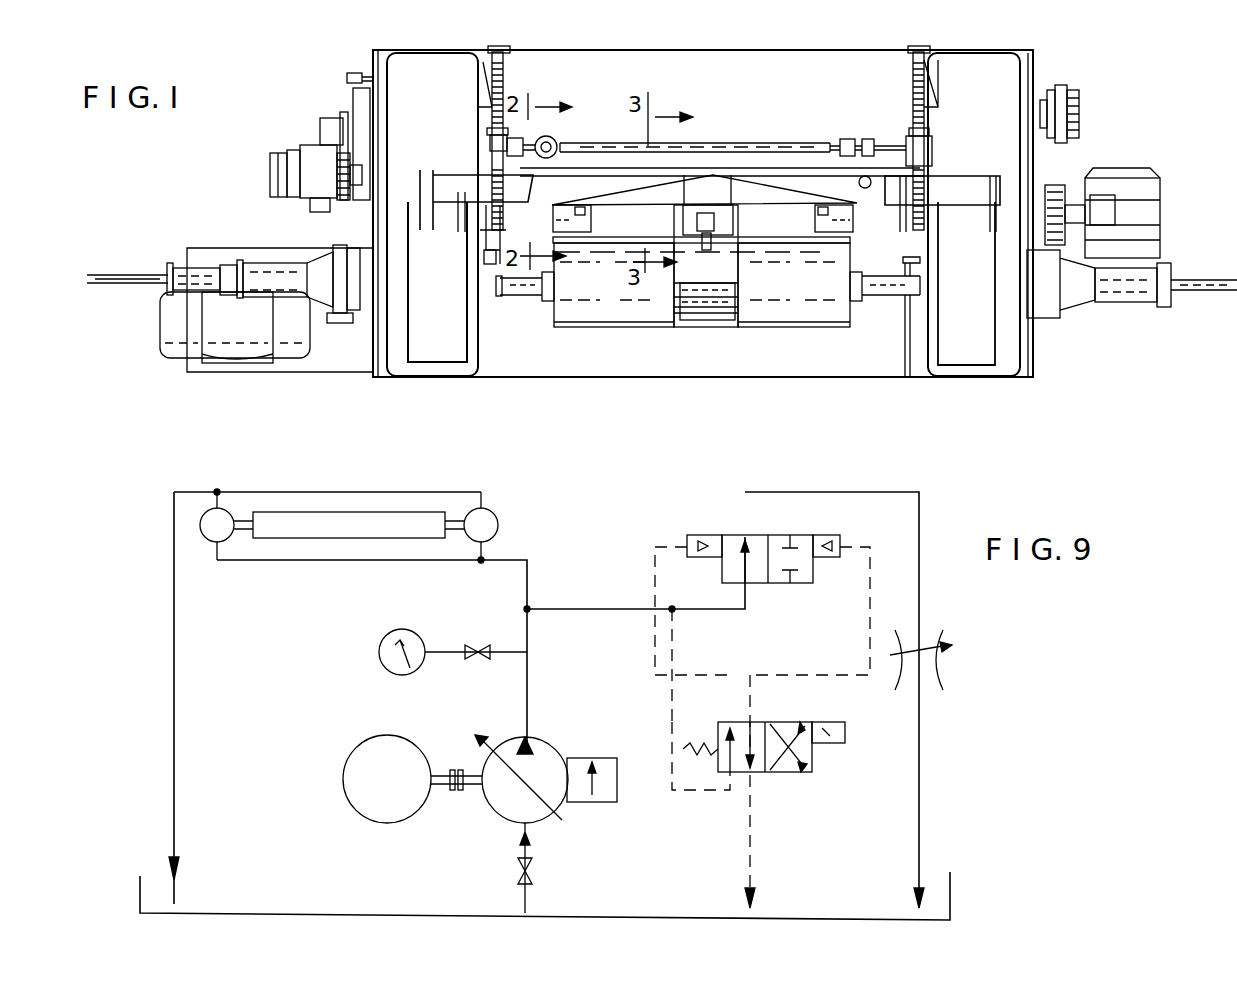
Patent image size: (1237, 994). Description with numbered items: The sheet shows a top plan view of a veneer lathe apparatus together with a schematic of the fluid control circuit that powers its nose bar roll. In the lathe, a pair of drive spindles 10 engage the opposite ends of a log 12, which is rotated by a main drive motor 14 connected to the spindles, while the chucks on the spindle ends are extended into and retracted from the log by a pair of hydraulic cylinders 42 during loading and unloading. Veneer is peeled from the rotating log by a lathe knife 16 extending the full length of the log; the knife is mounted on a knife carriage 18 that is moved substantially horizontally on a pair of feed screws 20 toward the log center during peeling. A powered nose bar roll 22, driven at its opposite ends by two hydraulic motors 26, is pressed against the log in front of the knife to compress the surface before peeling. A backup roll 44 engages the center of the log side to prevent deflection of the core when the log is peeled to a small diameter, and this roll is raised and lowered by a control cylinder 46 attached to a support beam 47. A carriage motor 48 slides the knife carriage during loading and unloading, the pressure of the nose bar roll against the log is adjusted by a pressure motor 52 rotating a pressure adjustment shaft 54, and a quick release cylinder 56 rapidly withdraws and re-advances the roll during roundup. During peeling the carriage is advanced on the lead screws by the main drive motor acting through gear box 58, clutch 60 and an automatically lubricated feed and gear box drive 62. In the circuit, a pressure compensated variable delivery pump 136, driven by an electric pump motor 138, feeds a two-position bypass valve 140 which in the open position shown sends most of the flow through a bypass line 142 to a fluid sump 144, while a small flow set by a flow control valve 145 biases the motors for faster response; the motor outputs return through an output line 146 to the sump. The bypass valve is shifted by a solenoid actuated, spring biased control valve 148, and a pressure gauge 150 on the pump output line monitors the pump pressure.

In FIG. 1, the drive spindles 10 is at (548, 300).
In FIG. 1, the log 12 is at (795, 310).
In FIG. 1, the main drive motor 14 is at (235, 335).
In FIG. 1, the lathe knife 16 is at (618, 244).
In FIG. 1, the knife carriage 18 is at (496, 222).
In FIG. 1, the feed screws 20 is at (480, 163).
In FIG. 1, the nose bar roll 22 is at (654, 230).
In FIG. 9, the nose bar roll 22 is at (340, 528).
In FIG. 1, the hydraulic motors 26 is at (582, 222).
In FIG. 9, the hydraulic motors 26 is at (205, 540).
In FIG. 1, the hydraulic cylinders 42 is at (265, 272).
In FIG. 1, the backup roll 44 is at (705, 320).
In FIG. 1, the control cylinder 46 is at (715, 222).
In FIG. 1, the support beam 47 is at (440, 178).
In FIG. 1, the carriage motor 48 is at (310, 158).
In FIG. 1, the pressure motor 52 is at (566, 142).
In FIG. 1, the pressure adjustment shaft 54 is at (548, 138).
In FIG. 1, the quick release cylinder 56 is at (858, 182).
In FIG. 1, the gear box 58 is at (1150, 176).
In FIG. 1, the clutch 60 is at (1080, 115).
In FIG. 1, the feed and gear box drive 62 is at (975, 70).
In FIG. 9, the pressure compensated variable delivery pump 136 is at (540, 740).
In FIG. 9, the electric pump motor 138 is at (365, 735).
In FIG. 9, the two-position bypass valve 140 is at (780, 535).
In FIG. 9, the bypass line 142 is at (919, 595).
In FIG. 9, the fluid sump 144 is at (951, 901).
In FIG. 9, the flow control valve 145 is at (932, 658).
In FIG. 9, the output line 146 is at (176, 695).
In FIG. 9, the control valve 148 is at (783, 775).
In FIG. 9, the pressure gauge 150 is at (412, 630).